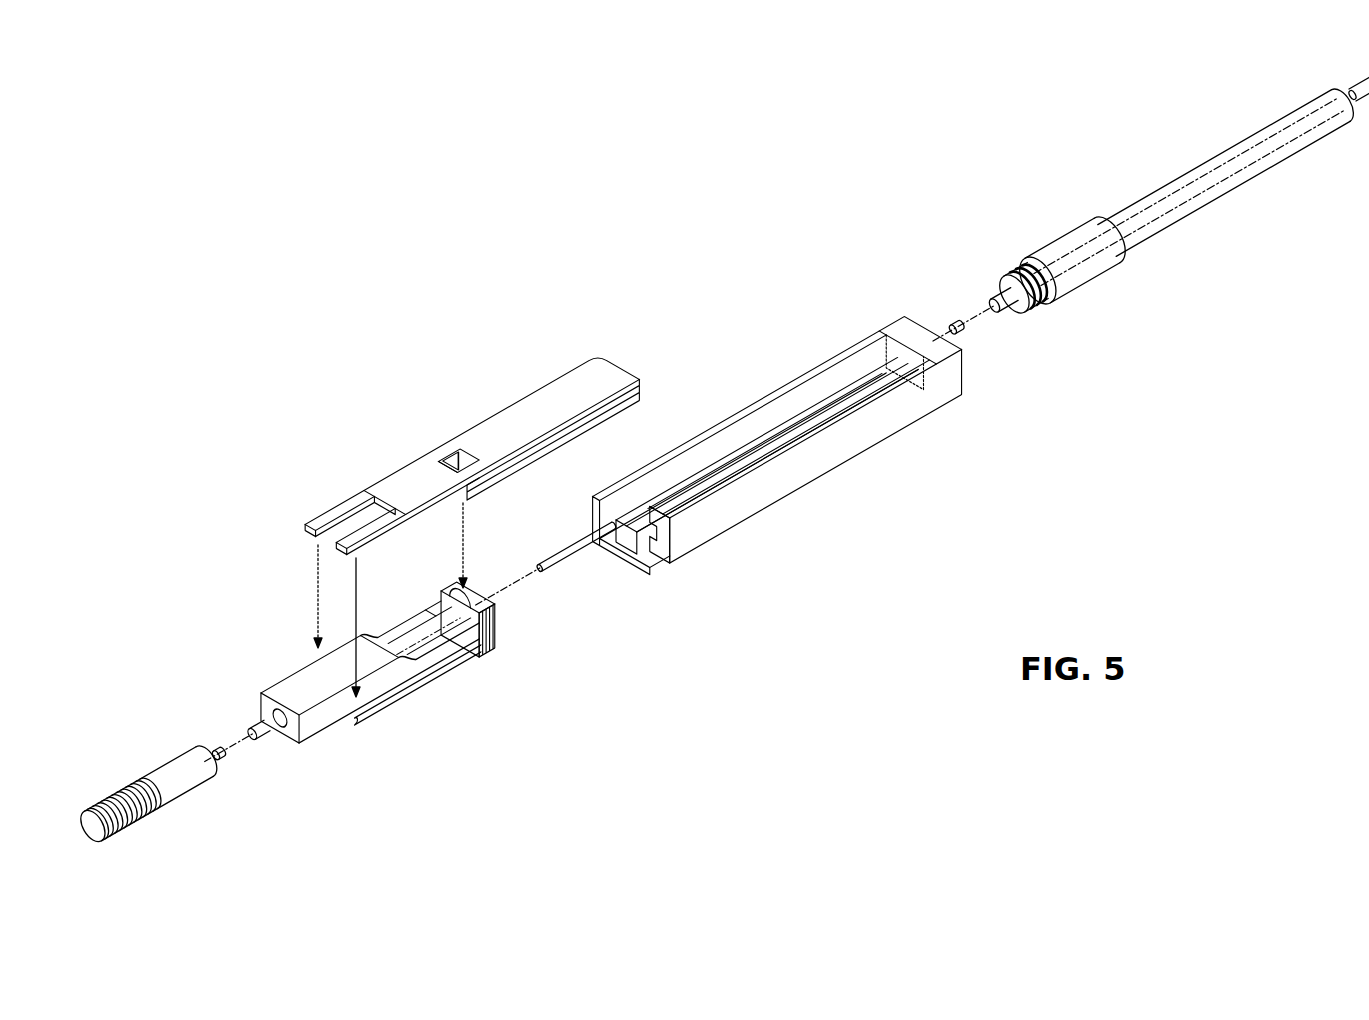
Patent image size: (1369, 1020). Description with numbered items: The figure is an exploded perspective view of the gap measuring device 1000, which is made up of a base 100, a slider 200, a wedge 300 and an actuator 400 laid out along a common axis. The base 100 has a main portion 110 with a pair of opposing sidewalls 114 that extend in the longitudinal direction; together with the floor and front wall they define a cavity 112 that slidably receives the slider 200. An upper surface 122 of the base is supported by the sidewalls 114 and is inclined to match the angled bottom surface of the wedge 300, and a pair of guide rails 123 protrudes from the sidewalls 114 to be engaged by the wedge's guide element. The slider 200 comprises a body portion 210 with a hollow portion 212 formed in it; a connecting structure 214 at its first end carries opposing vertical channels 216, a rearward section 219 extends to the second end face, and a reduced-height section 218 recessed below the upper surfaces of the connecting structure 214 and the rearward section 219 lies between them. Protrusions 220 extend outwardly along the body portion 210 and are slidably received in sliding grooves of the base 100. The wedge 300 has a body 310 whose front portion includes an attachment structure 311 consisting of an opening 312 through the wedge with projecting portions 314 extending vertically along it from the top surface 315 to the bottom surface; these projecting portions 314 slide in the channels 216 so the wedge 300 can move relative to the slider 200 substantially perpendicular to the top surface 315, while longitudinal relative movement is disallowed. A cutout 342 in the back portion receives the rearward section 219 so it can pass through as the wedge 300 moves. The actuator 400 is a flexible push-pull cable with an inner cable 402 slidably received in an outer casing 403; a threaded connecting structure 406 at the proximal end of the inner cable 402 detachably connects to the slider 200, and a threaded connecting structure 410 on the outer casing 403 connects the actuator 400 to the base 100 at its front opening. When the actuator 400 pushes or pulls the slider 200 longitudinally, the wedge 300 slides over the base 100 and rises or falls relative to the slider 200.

The gap measuring device 1000 is at (553, 218).
The base 100 is at (785, 355).
The main portion 110 is at (840, 450).
The cavity 112 is at (650, 532).
The sidewalls 114 is at (877, 355).
The upper surface 122 is at (717, 427).
The guide rails 123 is at (767, 410).
The slider 200 is at (440, 690).
The body portion 210 is at (318, 732).
The hollow portion 212 is at (395, 640).
The connecting structure 214 is at (465, 597).
The channels 216 is at (483, 655).
The reduced-height section 218 is at (423, 605).
The rearward section 219 is at (300, 680).
The protrusions 220 is at (480, 650).
The wedge 300 is at (494, 378).
The body 310 is at (598, 355).
The attachment structure 311 is at (475, 447).
The opening 312 is at (445, 440).
The projecting portions 314 is at (490, 478).
The top surface 315 is at (393, 487).
The cutout 342 is at (345, 530).
The actuator 400 is at (1226, 240).
The inner cable 402 is at (1010, 320).
The outer casing 403 is at (1258, 175).
The connecting structure 406 is at (172, 795).
The connecting structure 410 is at (1040, 308).